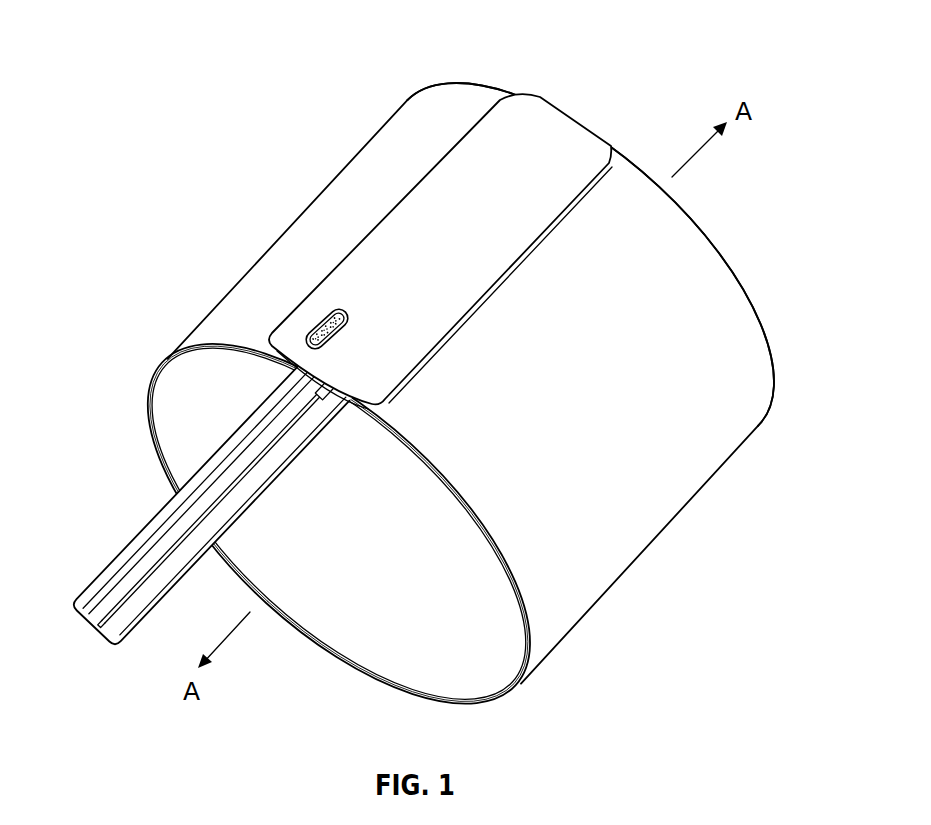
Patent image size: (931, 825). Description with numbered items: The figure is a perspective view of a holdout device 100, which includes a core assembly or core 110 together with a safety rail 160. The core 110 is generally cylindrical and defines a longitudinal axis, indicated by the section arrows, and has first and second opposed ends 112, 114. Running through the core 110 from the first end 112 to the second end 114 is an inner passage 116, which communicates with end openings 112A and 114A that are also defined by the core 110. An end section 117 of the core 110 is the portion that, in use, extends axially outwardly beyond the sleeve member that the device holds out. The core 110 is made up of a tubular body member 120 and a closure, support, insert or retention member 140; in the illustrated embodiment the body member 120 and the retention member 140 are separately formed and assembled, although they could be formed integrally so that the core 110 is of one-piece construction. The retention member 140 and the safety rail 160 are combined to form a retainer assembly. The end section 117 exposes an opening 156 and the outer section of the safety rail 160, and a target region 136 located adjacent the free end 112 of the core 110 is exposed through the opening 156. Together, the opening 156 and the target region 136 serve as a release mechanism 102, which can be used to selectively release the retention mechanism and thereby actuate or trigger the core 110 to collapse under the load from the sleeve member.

The holdout device 100 is at (135, 99).
The release mechanism 102 is at (355, 292).
The core assembly 110 is at (596, 633).
The first end 112 is at (152, 373).
The end opening 112A is at (150, 460).
The second end 114 is at (430, 84).
The end opening 114A is at (757, 267).
The inner passage 116 is at (376, 580).
The end section 117 is at (431, 418).
The tubular body member 120 is at (660, 497).
The target region 136 is at (305, 322).
The retention member 140 is at (536, 127).
The opening 156 is at (318, 317).
The safety rail 160 is at (94, 573).